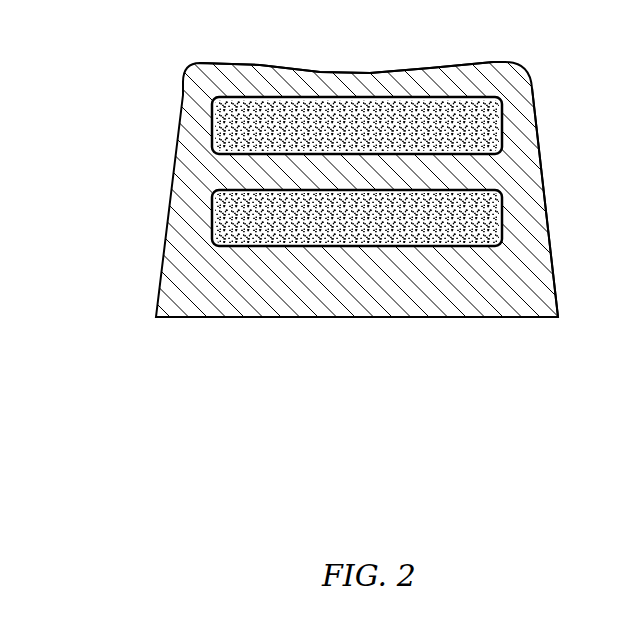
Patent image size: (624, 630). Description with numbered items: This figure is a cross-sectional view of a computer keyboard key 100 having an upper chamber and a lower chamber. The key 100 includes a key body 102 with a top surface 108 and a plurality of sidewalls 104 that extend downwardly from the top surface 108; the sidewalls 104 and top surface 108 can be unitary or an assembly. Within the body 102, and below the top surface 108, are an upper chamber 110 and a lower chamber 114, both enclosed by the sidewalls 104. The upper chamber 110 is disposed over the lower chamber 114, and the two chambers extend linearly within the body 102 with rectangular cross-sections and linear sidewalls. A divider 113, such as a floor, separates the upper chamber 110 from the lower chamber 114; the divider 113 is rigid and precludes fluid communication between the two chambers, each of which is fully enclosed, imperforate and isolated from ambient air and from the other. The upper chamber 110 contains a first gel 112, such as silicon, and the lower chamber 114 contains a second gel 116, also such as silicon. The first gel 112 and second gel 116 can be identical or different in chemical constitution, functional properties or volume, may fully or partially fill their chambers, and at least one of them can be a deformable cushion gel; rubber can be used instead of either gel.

The key 100 is at (92, 112).
The key body 102 is at (495, 62).
The sidewalls 104 is at (543, 193).
The top surface 108 is at (370, 72).
The upper chamber 110 is at (213, 107).
The first gel 112 is at (240, 102).
The divider 113 is at (280, 175).
The lower chamber 114 is at (226, 208).
The second gel 116 is at (236, 232).